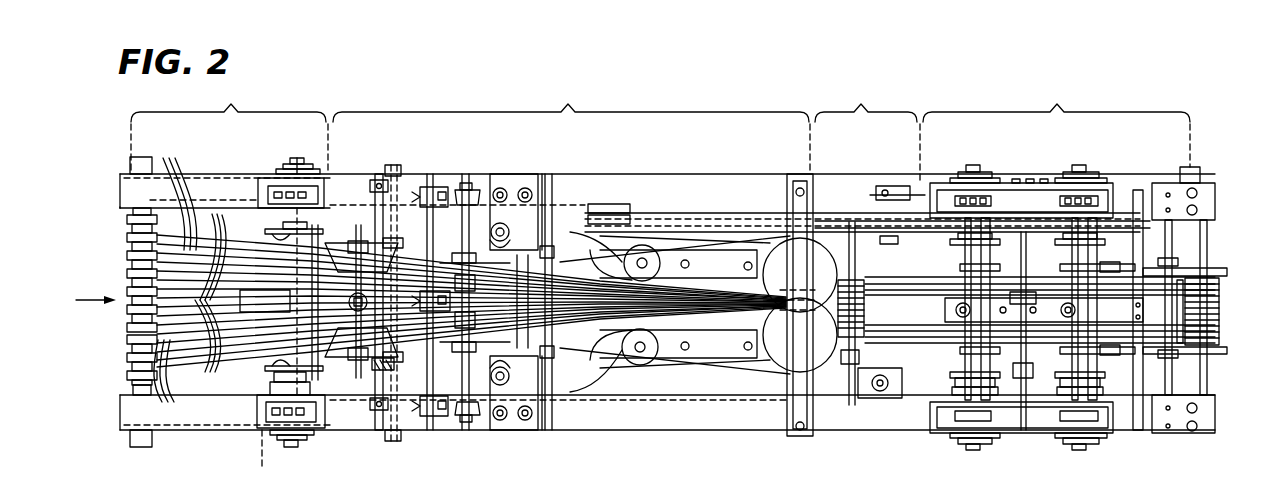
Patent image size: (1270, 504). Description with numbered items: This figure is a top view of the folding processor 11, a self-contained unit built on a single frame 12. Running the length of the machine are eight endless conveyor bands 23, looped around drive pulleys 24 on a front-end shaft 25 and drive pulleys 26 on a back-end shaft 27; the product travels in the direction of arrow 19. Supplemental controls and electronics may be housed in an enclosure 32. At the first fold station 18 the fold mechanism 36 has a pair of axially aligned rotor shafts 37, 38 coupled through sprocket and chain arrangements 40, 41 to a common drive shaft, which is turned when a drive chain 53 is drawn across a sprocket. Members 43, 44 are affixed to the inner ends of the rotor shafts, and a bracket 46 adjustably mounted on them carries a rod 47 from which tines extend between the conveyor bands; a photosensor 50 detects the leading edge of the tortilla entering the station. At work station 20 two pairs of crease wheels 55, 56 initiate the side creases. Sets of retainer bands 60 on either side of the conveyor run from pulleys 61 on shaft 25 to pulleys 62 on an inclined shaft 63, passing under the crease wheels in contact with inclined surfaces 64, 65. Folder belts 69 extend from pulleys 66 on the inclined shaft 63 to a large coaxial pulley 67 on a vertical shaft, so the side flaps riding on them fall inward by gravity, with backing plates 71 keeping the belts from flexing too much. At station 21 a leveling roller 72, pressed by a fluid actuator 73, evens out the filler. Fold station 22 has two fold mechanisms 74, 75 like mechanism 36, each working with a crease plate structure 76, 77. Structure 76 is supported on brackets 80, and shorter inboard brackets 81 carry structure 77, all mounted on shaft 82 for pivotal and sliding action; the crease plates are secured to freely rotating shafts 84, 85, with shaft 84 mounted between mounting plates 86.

The folding processor 11 is at (142, 466).
The frame 12 is at (662, 172).
The first work or fold station 18 is at (228, 131).
The arrow 19 is at (96, 298).
The work station 20 is at (569, 131).
The station 21 is at (867, 136).
The fold station 22 is at (1056, 128).
The endless belts or bands 23 is at (473, 298).
The drive pulleys 24 is at (128, 268).
The shaft 25 is at (128, 378).
The drive pulleys 26 is at (1222, 290).
The shaft 27 is at (1185, 432).
The enclosure 32 is at (766, 272).
The first fold mechanism 36 is at (282, 150).
The rotor shaft 37 is at (298, 158).
The rotor shaft 38 is at (290, 448).
The sprocket and chain arrangement 40 is at (280, 186).
The sprocket and chain arrangement 41 is at (262, 432).
The member 43 is at (266, 234).
The member 44 is at (262, 400).
The bracket 46 is at (330, 215).
The rod 47 is at (356, 176).
The photosensor 50 is at (262, 366).
The drive chain 53 is at (276, 430).
The crease wheels 55 is at (372, 190).
The crease wheels 56 is at (483, 180).
The retainer belts or bands 60 is at (182, 168).
The pulleys 61 is at (128, 228).
The pulleys 62 is at (546, 225).
The inclined shaft 63 is at (506, 222).
The inclined surface 64 is at (397, 200).
The inclined surface 65 is at (465, 192).
The pulleys 66 is at (546, 430).
The large coaxial pulley 67 is at (780, 240).
The folder belts or bands 69 is at (582, 235).
The backing plates 71 is at (710, 254).
The leveling roller 72 is at (766, 336).
The fluid actuator 73 is at (860, 400).
The fold mechanism 74 is at (975, 150).
The fold mechanism 75 is at (1079, 150).
The crease plate structure 76 is at (950, 346).
The crease plate structure 77 is at (1092, 272).
The brackets 80 is at (1218, 268).
The brackets 81 is at (1222, 270).
The shaft 82 is at (1135, 433).
The shaft 84 is at (960, 270).
The shaft 85 is at (1072, 262).
The mounting plates 86 is at (964, 262).